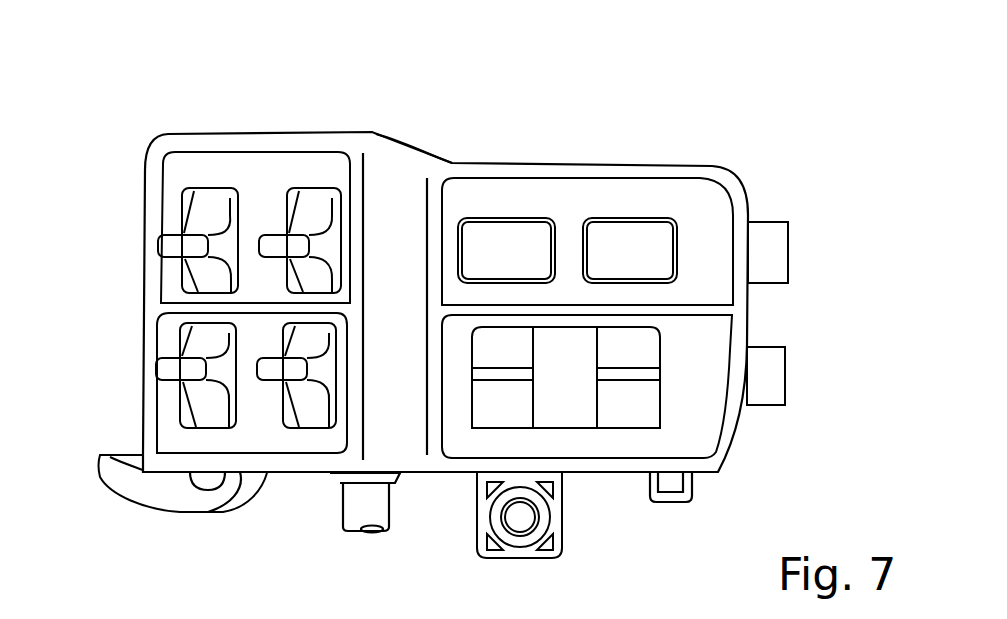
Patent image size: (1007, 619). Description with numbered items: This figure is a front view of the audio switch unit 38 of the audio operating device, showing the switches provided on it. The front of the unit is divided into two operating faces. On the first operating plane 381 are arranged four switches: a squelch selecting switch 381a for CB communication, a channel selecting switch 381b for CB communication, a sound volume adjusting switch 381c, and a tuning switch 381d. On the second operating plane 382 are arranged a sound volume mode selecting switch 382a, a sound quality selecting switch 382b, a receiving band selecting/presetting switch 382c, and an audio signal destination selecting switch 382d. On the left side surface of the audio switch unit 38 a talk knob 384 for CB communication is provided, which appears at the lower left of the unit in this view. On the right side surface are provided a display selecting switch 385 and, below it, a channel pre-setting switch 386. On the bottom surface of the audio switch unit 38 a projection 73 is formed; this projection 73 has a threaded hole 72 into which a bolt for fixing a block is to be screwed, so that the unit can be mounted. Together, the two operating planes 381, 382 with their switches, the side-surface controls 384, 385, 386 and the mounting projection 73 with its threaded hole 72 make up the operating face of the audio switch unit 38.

The audio switch unit 38 is at (338, 128).
The first operating plane 381 is at (267, 157).
The squelch selecting switch 381a is at (156, 244).
The channel selecting switch 381b is at (328, 207).
The sound volume adjusting switch 381c is at (155, 364).
The tuning switch 381d is at (298, 408).
The second operating plane 382 is at (707, 232).
The sound volume mode selecting switch 382a is at (537, 238).
The sound quality selecting switch 382b is at (635, 230).
The receiving band selecting/presetting switch 382c is at (490, 360).
The audio signal destination selecting switch 382d is at (648, 403).
The talk knob 384 is at (152, 492).
The display selecting switch 385 is at (782, 247).
The channel pre-setting switch 386 is at (780, 372).
The projection 73 is at (557, 528).
The threaded hole 72 is at (523, 520).